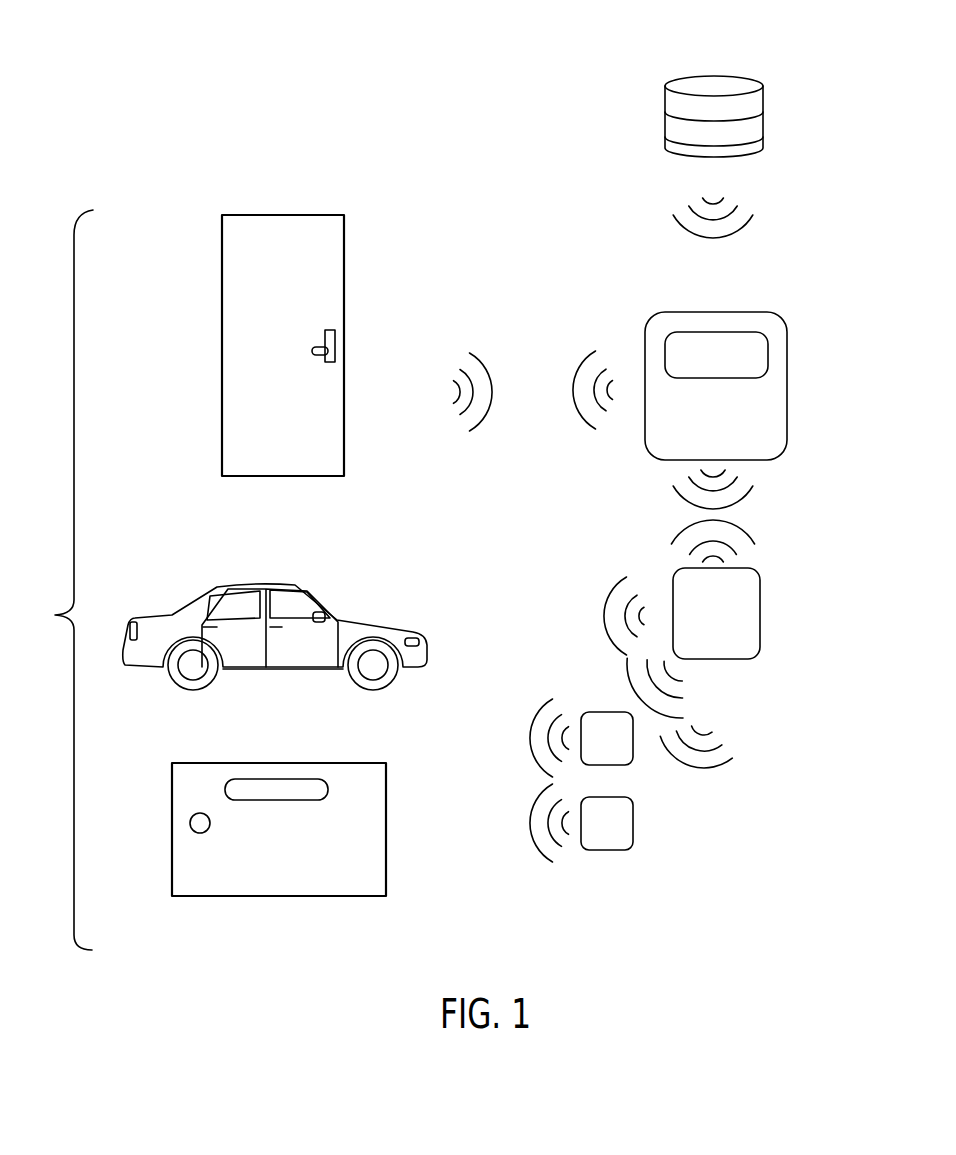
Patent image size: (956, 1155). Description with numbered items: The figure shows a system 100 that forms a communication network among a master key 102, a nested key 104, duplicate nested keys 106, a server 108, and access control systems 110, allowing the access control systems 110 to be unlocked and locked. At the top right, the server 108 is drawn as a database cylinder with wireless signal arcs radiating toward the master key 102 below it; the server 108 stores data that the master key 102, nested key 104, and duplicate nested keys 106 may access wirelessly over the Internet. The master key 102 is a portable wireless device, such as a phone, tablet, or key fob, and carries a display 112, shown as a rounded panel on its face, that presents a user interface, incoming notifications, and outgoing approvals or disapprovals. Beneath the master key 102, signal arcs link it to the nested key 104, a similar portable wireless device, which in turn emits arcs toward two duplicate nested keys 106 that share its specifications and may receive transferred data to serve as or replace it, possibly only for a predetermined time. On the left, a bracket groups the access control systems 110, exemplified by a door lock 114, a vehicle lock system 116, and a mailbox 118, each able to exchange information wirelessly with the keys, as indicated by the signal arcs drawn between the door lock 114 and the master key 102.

The system 100 is at (236, 107).
The master key 102 is at (804, 290).
The nested key 104 is at (769, 557).
The duplicate nested keys 106 is at (633, 757).
The server 108 is at (763, 86).
The access control systems 110 is at (55, 580).
The display 112 is at (768, 349).
The door lock 114 is at (344, 313).
The vehicle lock system 116 is at (347, 618).
The mailbox 118 is at (386, 803).